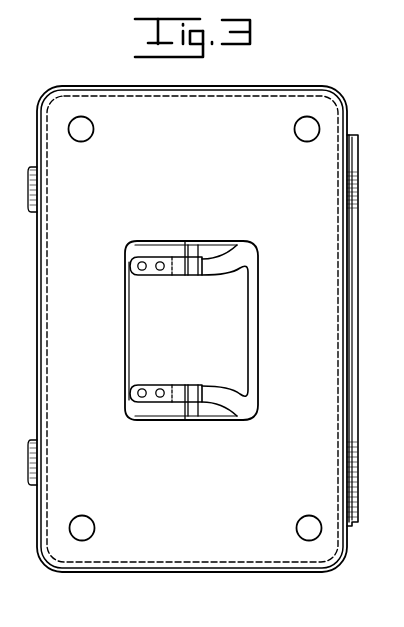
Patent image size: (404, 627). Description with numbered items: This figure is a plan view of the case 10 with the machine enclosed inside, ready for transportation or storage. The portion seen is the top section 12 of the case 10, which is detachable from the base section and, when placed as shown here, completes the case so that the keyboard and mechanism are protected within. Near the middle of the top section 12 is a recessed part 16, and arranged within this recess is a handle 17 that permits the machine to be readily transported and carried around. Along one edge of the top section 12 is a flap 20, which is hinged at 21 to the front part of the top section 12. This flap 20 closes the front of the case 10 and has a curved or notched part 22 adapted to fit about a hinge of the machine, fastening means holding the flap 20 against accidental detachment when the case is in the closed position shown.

The case 10 is at (280, 105).
The top section 12 is at (211, 553).
The recessed part 16 is at (140, 336).
The handle 17 is at (232, 251).
The flap 20 is at (343, 282).
The hinge 21 is at (351, 302).
The notched part 22 is at (357, 331).